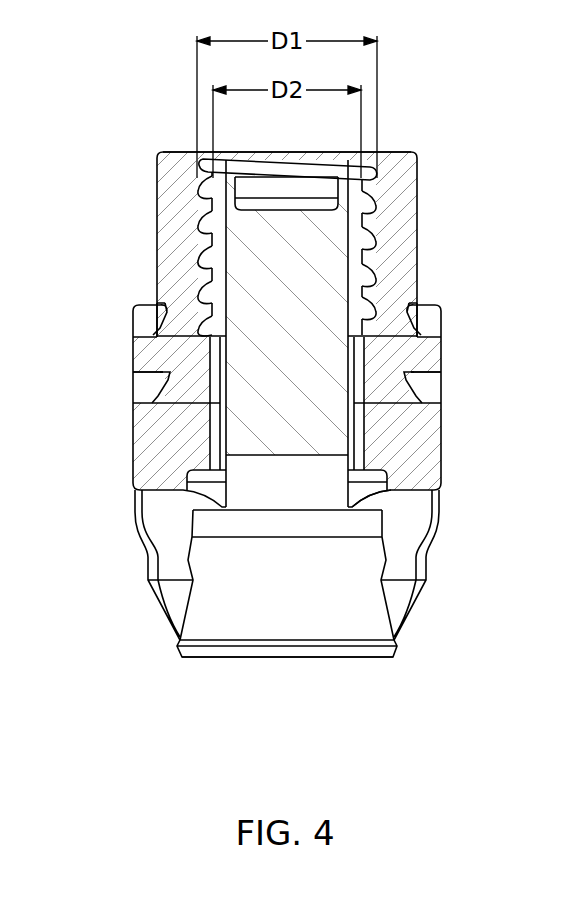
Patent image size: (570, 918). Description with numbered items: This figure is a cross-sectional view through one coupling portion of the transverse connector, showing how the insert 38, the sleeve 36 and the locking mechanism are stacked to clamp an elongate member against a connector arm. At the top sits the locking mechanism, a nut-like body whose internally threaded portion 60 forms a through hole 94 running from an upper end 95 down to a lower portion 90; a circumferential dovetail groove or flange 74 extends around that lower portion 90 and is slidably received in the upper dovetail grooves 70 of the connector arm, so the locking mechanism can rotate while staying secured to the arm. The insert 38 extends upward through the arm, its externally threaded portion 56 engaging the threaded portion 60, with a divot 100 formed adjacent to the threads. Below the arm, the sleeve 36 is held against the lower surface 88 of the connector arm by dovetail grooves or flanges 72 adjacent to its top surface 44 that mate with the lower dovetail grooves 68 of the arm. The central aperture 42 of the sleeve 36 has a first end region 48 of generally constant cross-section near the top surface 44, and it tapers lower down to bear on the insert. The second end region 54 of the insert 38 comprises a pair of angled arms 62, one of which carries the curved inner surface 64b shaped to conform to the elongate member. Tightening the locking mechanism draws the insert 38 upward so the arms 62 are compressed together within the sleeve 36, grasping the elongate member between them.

The sleeve 36 is at (427, 547).
The insert 38 is at (335, 417).
The central aperture 42 is at (362, 488).
The top surface 44 is at (185, 392).
The first end region 48 is at (353, 450).
The second end region 54 is at (287, 658).
The threaded portion 56 is at (337, 230).
The threaded portion 60 is at (352, 178).
The arms 62 is at (180, 636).
The second curved inner surface 64b is at (362, 618).
The dovetail grooves 68 is at (160, 373).
The dovetail grooves 70 is at (153, 330).
The dovetail grooves or flanges 72 is at (153, 403).
The dovetail groove or flange 74 is at (155, 303).
The lower surface 88 is at (393, 402).
The lower portion 90 is at (177, 327).
The through hole 94 is at (227, 162).
The upper end 95 is at (395, 152).
The divot 100 is at (278, 183).